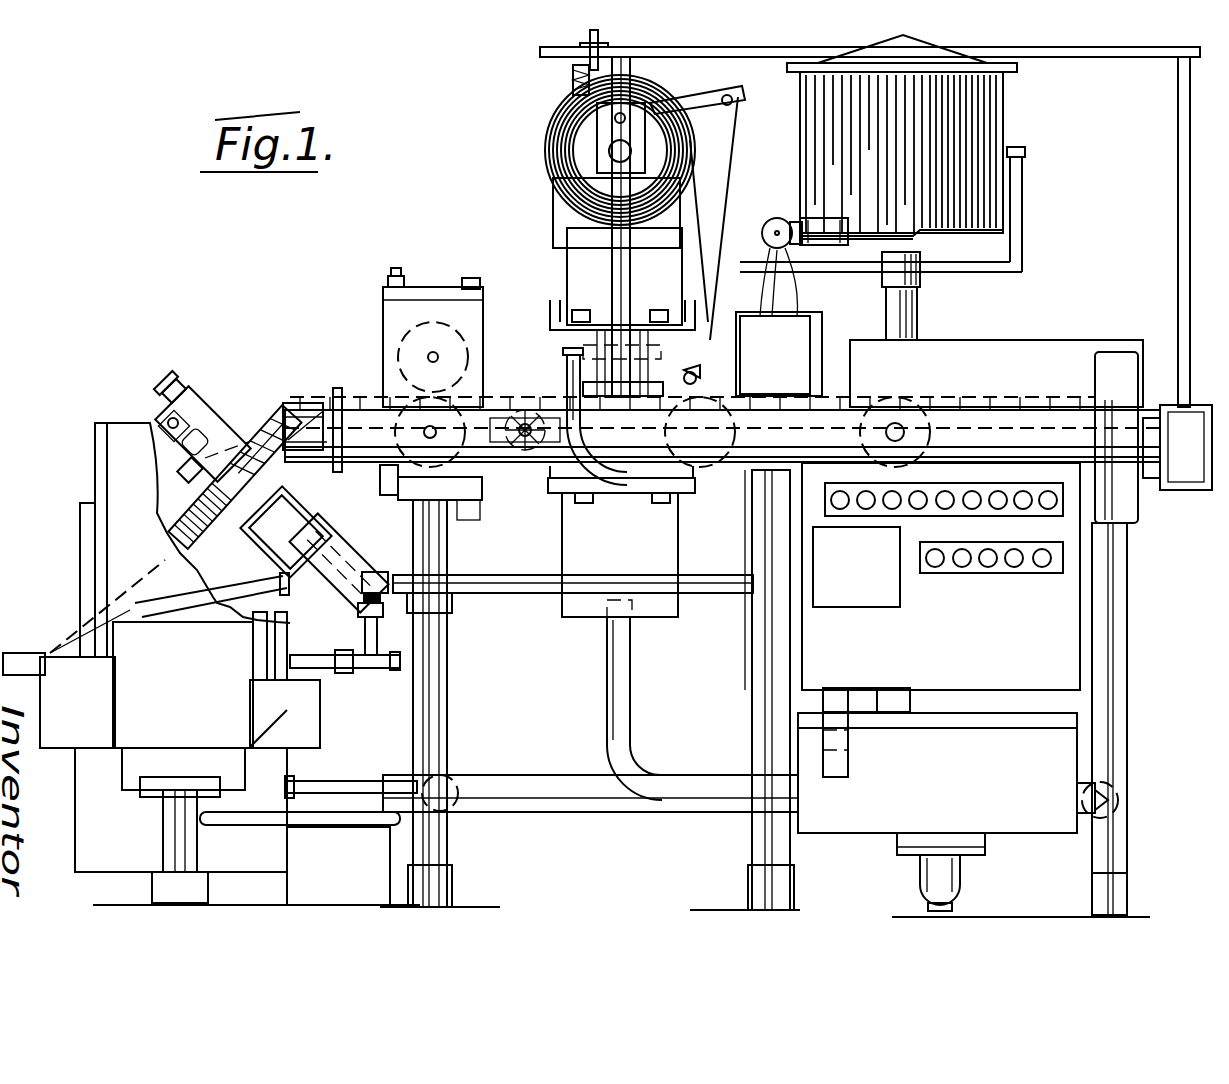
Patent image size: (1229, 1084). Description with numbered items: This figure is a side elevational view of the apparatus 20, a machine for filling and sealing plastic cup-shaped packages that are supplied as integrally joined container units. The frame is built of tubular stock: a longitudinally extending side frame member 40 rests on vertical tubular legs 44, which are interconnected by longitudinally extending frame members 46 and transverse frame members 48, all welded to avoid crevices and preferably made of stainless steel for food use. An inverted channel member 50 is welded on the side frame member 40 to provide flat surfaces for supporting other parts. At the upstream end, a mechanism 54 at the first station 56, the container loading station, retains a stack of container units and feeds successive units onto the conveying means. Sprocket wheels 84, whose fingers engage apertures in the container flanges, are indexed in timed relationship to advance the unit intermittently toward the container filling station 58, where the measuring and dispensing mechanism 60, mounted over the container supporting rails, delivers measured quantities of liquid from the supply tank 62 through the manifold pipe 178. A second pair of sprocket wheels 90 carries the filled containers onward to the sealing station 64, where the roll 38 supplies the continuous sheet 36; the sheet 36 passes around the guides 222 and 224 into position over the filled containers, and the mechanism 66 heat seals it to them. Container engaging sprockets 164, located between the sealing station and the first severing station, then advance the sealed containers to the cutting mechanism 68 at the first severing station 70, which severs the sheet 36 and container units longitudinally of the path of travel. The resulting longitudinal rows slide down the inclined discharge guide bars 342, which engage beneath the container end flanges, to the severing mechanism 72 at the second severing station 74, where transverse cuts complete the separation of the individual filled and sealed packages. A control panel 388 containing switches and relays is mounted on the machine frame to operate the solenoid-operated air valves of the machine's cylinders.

The apparatus 20 is at (528, 258).
The continuous sheet 36 is at (715, 238).
The roll 38 is at (548, 130).
The side frame member 40 is at (1065, 462).
The vertical tubular legs 44 is at (523, 680).
The longitudinally extending frame members 46 is at (556, 806).
The transverse frame members 48 is at (445, 783).
The inverted channel member 50 is at (1028, 425).
The mechanism 54 is at (1105, 332).
The first station 56 is at (973, 488).
The container filling station 58 is at (722, 462).
The measuring and dispensing mechanism 60 is at (836, 330).
The supply tank 62 is at (1003, 122).
The sealing station 64 is at (628, 445).
The mechanism 66 is at (565, 351).
The cutting mechanism 68 is at (378, 378).
The first severing station 70 is at (400, 440).
The severing mechanism 72 is at (243, 407).
The second severing station 74 is at (258, 528).
The sprocket wheels 84 is at (930, 418).
The sprocket wheels 90 is at (702, 468).
The container engaging sprockets 164 is at (528, 455).
The manifold pipe 178 is at (830, 226).
The guide 222 is at (727, 95).
The guide 224 is at (690, 378).
The inclined discharge guide bars 342 is at (187, 515).
The control panel 388 is at (1063, 677).